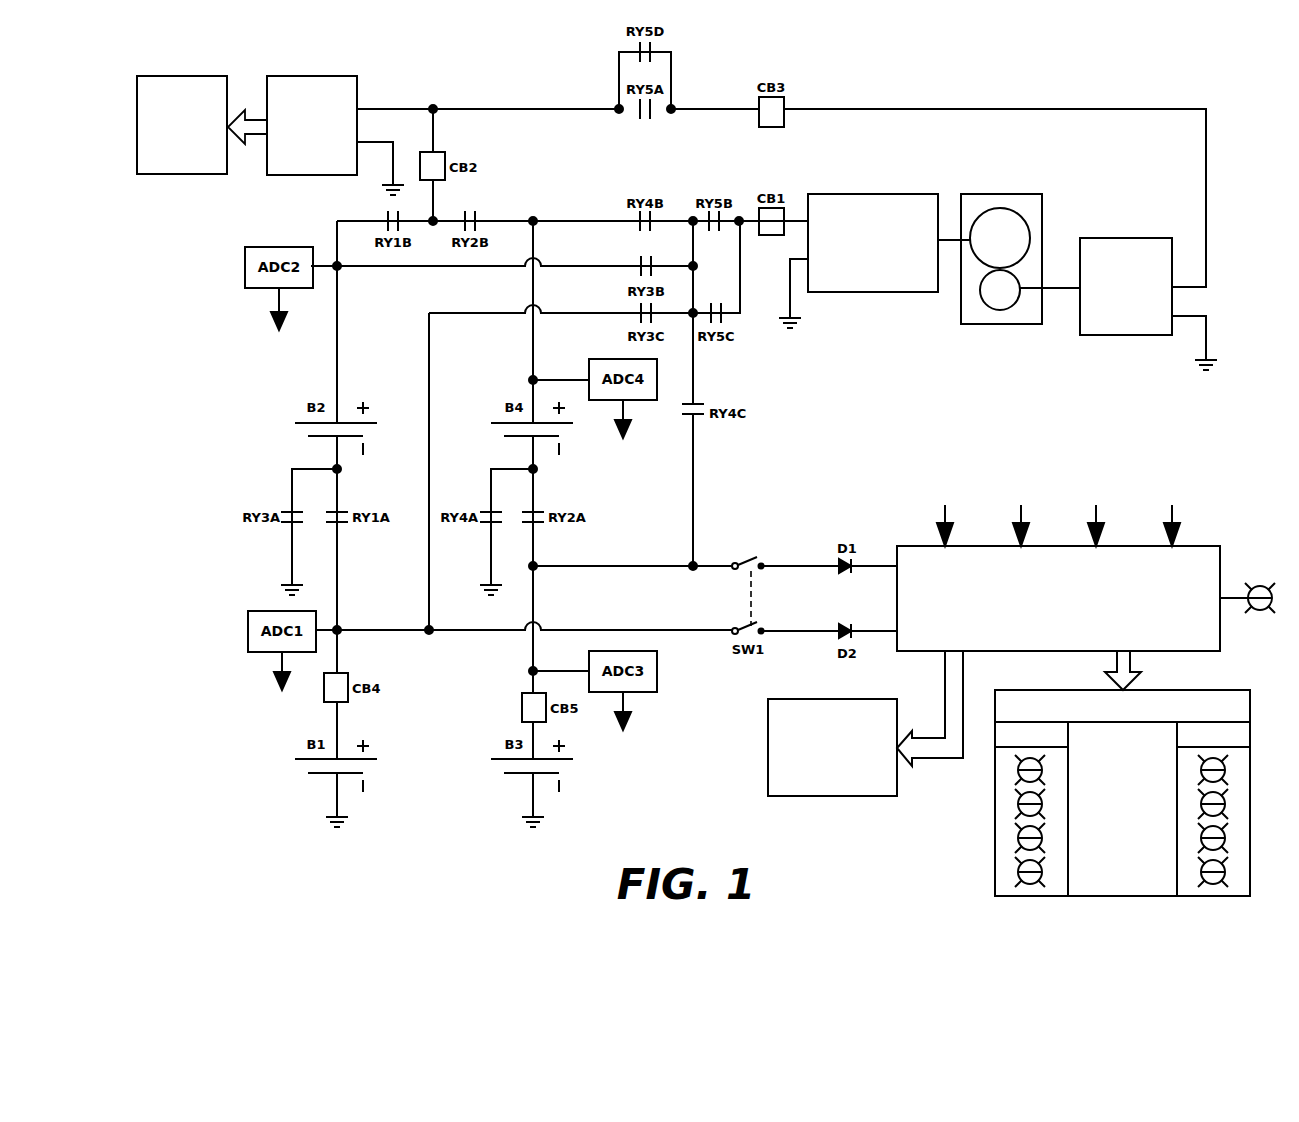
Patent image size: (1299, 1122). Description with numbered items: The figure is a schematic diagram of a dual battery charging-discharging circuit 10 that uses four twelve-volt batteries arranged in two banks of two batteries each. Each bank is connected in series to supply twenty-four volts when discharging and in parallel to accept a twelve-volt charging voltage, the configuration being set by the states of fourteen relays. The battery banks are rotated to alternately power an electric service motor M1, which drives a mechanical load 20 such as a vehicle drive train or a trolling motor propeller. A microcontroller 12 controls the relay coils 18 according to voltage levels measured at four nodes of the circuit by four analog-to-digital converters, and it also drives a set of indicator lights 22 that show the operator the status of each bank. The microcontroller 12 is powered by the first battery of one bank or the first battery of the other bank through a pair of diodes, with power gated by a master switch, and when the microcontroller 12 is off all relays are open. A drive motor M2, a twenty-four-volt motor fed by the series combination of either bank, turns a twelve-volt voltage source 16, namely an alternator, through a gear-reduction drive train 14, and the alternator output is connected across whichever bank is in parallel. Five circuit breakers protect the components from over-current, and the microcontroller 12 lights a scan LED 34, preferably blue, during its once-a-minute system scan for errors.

The dual battery charging-discharging circuit 10 is at (1220, 101).
The microcontroller 12 is at (1212, 546).
The gear-reduction drive train 14 is at (1008, 194).
The 12 VDC voltage source 16 is at (886, 194).
The relay coils 18 is at (865, 699).
The mechanical load 20 is at (199, 76).
The indicator lights 22 is at (1232, 690).
The scan LED 34 is at (1264, 585).
The service motor M1 is at (328, 76).
The drive motor M2 is at (1129, 238).